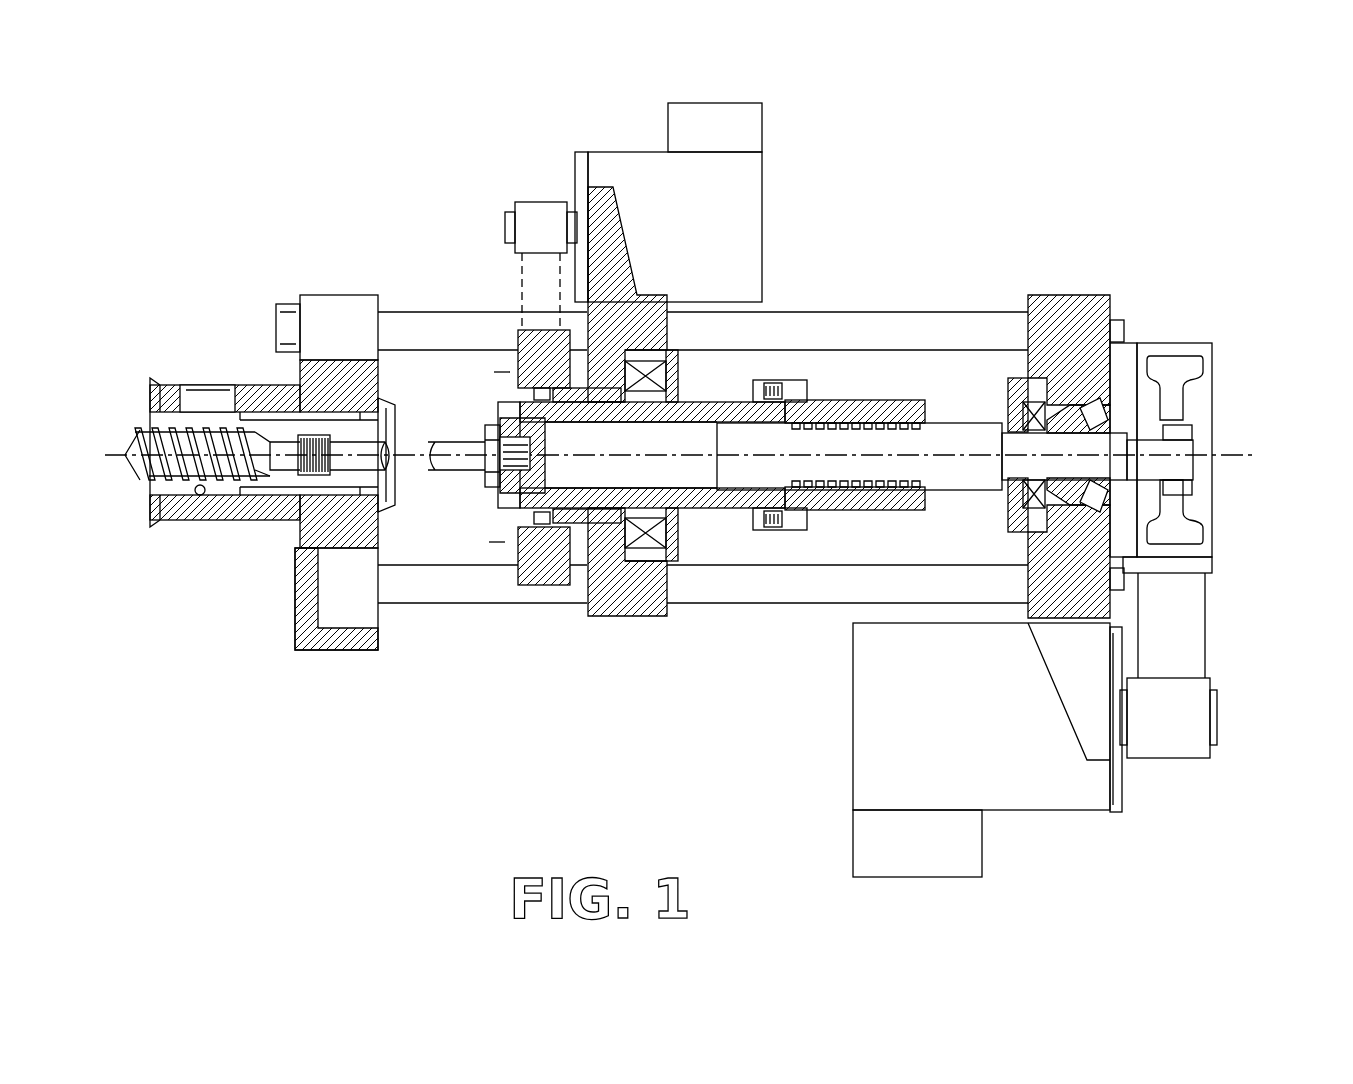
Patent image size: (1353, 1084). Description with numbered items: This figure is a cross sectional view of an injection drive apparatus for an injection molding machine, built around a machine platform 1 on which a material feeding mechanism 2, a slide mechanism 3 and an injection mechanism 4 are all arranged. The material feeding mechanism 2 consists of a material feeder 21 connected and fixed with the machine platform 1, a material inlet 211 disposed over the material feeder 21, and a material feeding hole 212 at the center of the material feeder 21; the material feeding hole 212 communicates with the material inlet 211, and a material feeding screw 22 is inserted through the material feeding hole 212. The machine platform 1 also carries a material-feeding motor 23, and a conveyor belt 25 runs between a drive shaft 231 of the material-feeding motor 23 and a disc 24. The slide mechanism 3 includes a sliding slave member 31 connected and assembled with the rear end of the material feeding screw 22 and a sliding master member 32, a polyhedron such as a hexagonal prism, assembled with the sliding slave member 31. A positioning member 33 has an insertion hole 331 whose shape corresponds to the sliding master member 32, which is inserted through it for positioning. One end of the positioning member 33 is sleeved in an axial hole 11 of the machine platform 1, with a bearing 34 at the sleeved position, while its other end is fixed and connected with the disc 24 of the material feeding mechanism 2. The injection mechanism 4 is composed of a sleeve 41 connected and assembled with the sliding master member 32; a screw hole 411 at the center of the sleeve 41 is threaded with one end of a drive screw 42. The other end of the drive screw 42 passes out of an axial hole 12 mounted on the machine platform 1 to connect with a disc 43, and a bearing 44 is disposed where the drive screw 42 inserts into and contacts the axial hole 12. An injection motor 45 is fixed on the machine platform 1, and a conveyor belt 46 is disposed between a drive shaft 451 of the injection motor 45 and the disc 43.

The machine platform 1 is at (795, 600).
The material feeding mechanism 2 is at (290, 598).
The material feeder 21 is at (292, 395).
The material inlet 211 is at (203, 392).
The material feeding hole 212 is at (205, 492).
The material feeding screw 22 is at (148, 440).
The material-feeding motor 23 is at (745, 183).
The drive shaft 231 is at (540, 200).
The disc 24 is at (540, 333).
The conveyor belt 25 is at (520, 290).
The slide mechanism 3 is at (420, 713).
The sliding slave member 31 is at (500, 500).
The sliding master member 32 is at (540, 590).
The positioning member 33 is at (618, 548).
The insertion hole 331 is at (598, 526).
The bearing 34 is at (670, 560).
The axial hole 11 is at (690, 382).
The axial hole 12 is at (1062, 402).
The injection mechanism 4 is at (1225, 537).
The sleeve 41 is at (876, 432).
The screw hole 411 is at (915, 440).
The drive screw 42 is at (965, 445).
The disc 43 is at (1178, 348).
The bearing 44 is at (1105, 405).
The injection motor 45 is at (1045, 780).
The drive shaft 451 is at (1185, 745).
The conveyor belt 46 is at (1180, 612).